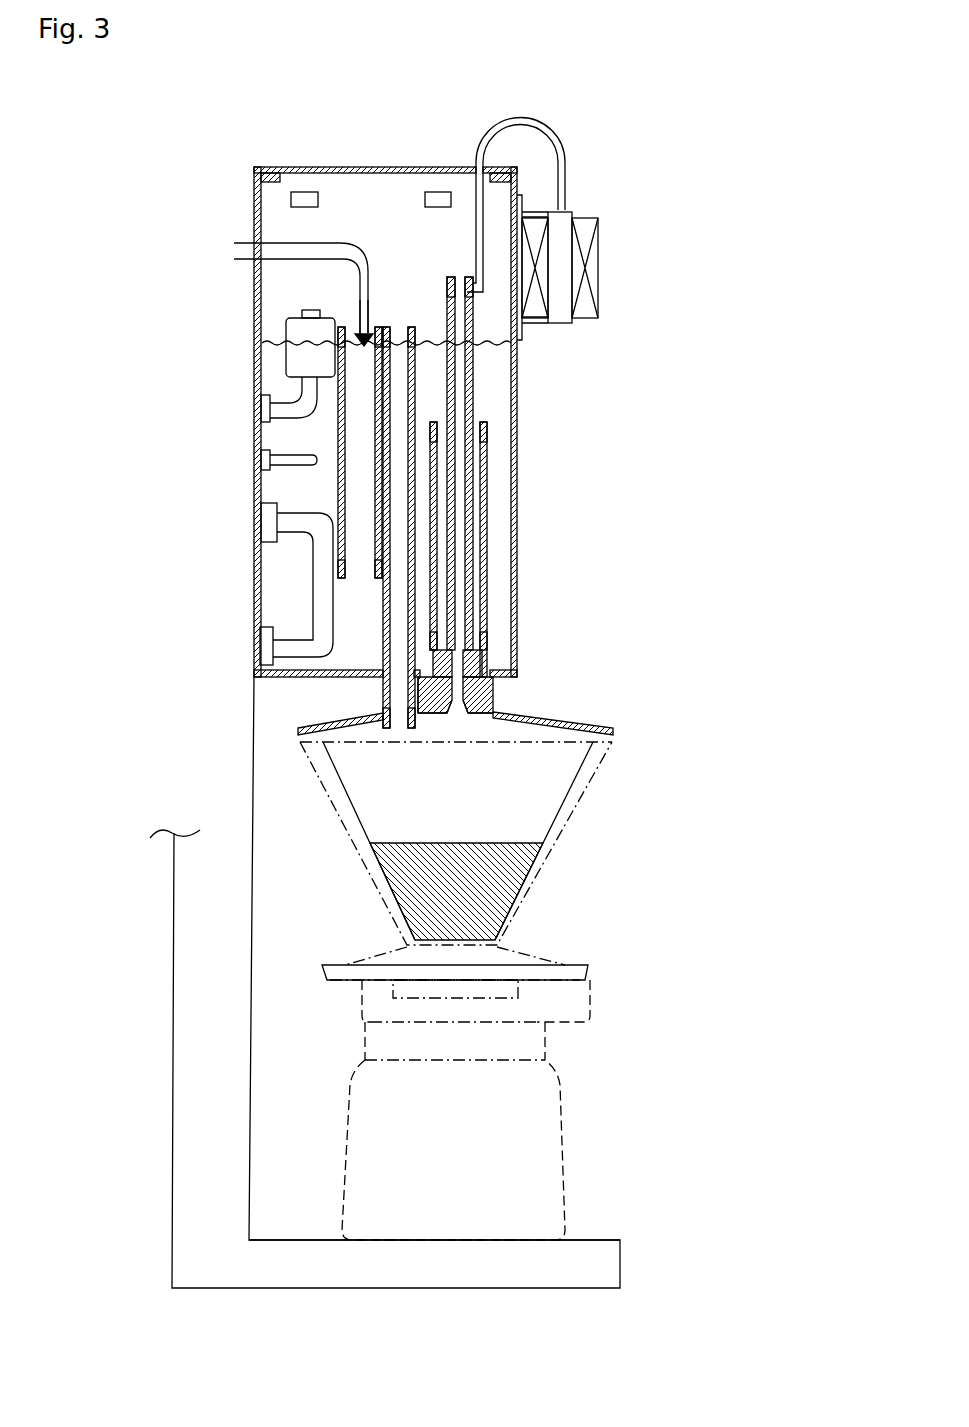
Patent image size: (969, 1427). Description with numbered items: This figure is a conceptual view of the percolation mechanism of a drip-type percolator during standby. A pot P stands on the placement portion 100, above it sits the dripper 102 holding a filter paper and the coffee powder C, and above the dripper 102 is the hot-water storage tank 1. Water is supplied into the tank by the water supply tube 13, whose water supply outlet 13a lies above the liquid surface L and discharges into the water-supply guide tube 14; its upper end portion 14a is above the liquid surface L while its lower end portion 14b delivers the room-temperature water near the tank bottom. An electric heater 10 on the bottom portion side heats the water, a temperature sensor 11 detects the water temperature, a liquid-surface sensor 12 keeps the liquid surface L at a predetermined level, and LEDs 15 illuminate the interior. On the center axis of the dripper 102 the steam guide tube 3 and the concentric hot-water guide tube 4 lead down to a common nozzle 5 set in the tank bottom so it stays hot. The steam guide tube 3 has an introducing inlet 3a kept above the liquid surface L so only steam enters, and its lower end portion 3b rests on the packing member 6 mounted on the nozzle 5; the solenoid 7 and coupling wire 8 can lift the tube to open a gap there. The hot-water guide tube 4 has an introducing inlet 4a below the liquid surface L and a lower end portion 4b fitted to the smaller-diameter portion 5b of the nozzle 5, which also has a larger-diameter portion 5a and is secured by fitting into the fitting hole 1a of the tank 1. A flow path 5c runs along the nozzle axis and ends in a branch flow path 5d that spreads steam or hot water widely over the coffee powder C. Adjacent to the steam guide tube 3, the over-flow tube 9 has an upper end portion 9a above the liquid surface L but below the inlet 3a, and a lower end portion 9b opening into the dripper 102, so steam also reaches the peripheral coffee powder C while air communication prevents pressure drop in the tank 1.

The hot-water storage tank 1 is at (455, 165).
The fitting hole 1a is at (345, 721).
The steam guide tube 3 is at (473, 335).
The introducing inlet 3a is at (458, 277).
The lower end portion 3b is at (482, 646).
The hot-water guide tube 4 is at (487, 575).
The introducing inlet 4a is at (488, 423).
The lower end portion 4b is at (433, 652).
The nozzle 5 is at (497, 699).
The larger-diameter portion 5a is at (427, 717).
The smaller-diameter portion 5b is at (417, 713).
The flow path 5c is at (488, 716).
The branch flow path 5d is at (453, 716).
The packing member 6 is at (500, 683).
The solenoid 7 is at (598, 276).
The coupling wire 8 is at (565, 172).
The over-flow tube 9 is at (413, 327).
The upper end portion 9a is at (398, 332).
The lower end portion 9b is at (397, 727).
The electric heater 10 is at (303, 571).
The temperature sensor 11 is at (293, 466).
The liquid-surface sensor 12 is at (287, 320).
The water supply tube 13 is at (325, 243).
The water supply outlet 13a is at (368, 298).
The water-supply guide tube 14 is at (338, 428).
The upper end portion 14a is at (353, 327).
The lower end portion 14b is at (345, 596).
The LEDs 15 is at (440, 191).
The liquid surface L is at (270, 343).
The coffee powder C is at (540, 843).
The dripper 102 is at (525, 905).
The pot P is at (565, 1120).
The placement portion 100 is at (630, 1210).